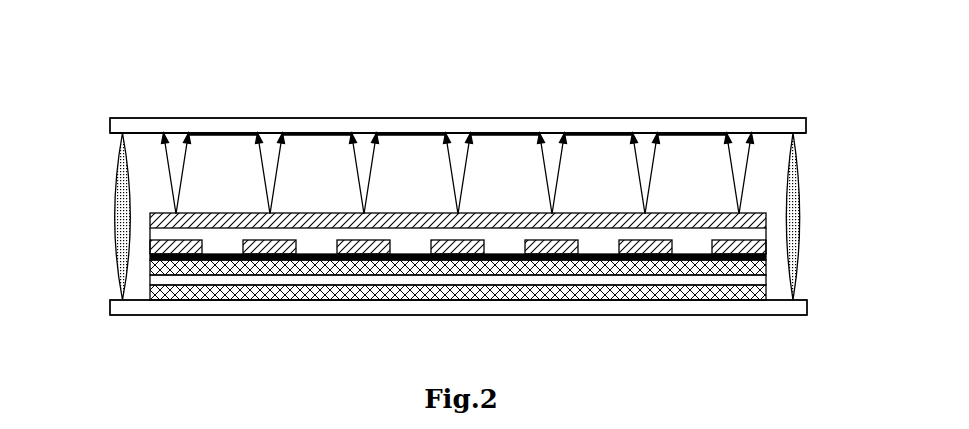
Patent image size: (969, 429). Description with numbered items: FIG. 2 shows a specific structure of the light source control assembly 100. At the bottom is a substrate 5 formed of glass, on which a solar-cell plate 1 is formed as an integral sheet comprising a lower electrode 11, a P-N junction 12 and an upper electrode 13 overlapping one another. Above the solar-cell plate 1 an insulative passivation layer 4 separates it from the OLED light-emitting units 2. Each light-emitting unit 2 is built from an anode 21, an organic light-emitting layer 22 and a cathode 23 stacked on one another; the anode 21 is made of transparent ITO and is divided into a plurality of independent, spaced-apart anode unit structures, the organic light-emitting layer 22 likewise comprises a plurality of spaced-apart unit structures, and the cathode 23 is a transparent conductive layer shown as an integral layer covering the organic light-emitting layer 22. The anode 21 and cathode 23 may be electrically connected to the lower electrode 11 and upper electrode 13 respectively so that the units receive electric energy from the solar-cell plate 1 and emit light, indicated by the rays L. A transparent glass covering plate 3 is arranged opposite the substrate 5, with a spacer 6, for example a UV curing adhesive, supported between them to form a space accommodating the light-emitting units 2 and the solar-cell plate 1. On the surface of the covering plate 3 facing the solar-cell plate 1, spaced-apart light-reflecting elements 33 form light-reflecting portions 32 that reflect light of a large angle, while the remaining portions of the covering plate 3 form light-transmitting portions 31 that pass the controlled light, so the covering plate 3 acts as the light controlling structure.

The light source control assembly 100 is at (38, 43).
The solar-cell plate 1 is at (512, 256).
The lower electrode 11 is at (767, 289).
The P-N junction 12 is at (767, 276).
The upper electrode 13 is at (767, 263).
The light-emitting unit 2 is at (168, 255).
The anode 21 is at (150, 251).
The organic light-emitting layer 22 is at (150, 236).
The cathode 23 is at (150, 218).
The covering plate 3 is at (807, 126).
The light-transmitting portion 31 is at (613, 75).
The light-reflecting portion 32 is at (472, 75).
The light-reflecting element 33 is at (218, 139).
The insulative passivation layer 4 is at (451, 263).
The substrate 5 is at (808, 310).
The spacer 6 is at (798, 186).
The light ray L is at (285, 173).